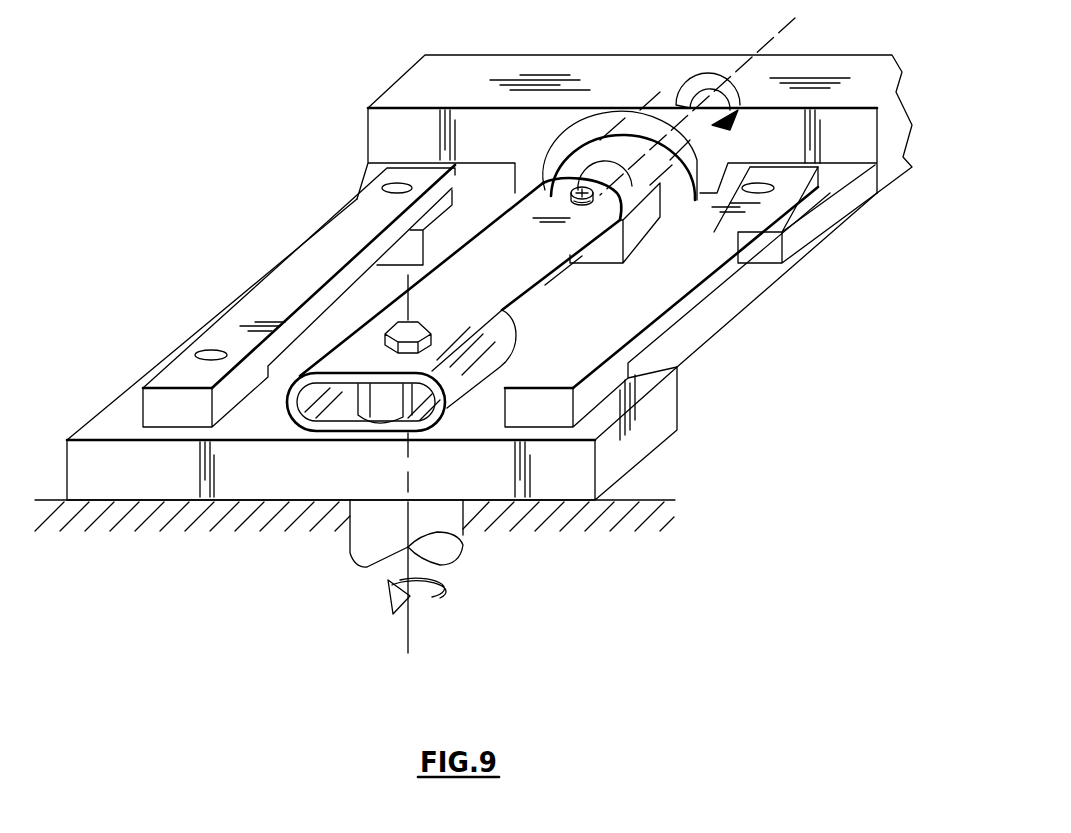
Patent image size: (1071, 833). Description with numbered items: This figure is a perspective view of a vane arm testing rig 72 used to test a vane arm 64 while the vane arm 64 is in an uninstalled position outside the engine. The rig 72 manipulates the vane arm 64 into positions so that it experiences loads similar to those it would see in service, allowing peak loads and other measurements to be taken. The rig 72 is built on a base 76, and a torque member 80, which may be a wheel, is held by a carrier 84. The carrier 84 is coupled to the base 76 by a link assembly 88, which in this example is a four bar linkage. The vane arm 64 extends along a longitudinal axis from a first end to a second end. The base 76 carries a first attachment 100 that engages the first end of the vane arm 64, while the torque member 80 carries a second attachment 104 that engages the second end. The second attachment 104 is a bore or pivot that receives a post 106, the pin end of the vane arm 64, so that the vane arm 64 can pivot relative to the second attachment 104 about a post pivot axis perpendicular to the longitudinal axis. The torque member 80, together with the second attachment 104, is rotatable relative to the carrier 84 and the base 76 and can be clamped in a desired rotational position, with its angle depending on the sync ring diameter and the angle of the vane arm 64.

The vane arm testing rig 72 is at (320, 80).
The carrier 84 is at (427, 92).
The link assembly 88 is at (268, 244).
The post 106 is at (581, 188).
The second attachment 104 is at (585, 205).
The torque member 80 is at (677, 192).
The vane arm 64 is at (503, 270).
The first attachment 100 is at (388, 327).
The base 76 is at (637, 400).